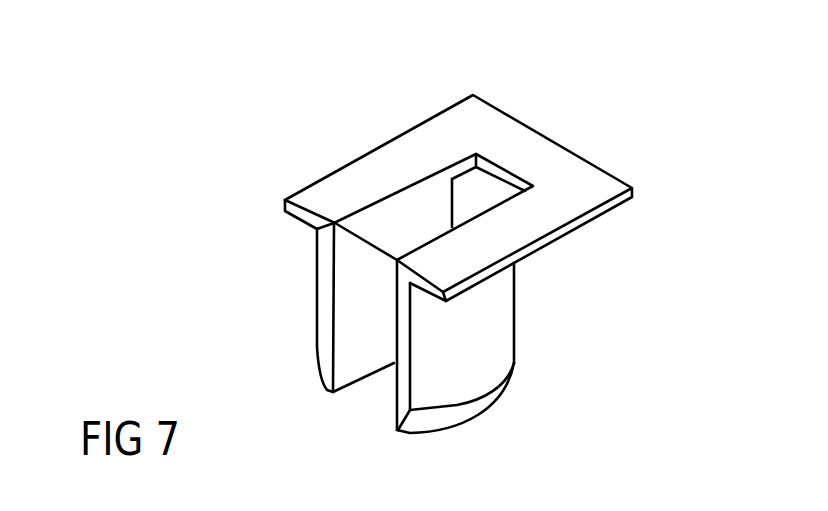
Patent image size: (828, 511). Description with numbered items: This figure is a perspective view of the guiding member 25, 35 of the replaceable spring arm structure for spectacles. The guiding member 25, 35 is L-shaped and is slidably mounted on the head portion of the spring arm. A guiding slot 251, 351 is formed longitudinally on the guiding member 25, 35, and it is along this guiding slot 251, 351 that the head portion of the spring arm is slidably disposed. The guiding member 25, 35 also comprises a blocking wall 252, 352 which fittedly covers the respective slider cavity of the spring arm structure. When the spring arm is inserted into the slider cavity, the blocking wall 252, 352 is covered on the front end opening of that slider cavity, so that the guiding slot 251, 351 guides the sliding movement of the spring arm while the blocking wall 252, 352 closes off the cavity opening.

The guiding member 25 is at (502, 236).
The guiding member 35 is at (502, 236).
The guiding slot 251 is at (360, 234).
The guiding slot 351 is at (398, 230).
The blocking wall 252 is at (459, 180).
The blocking wall 352 is at (573, 177).